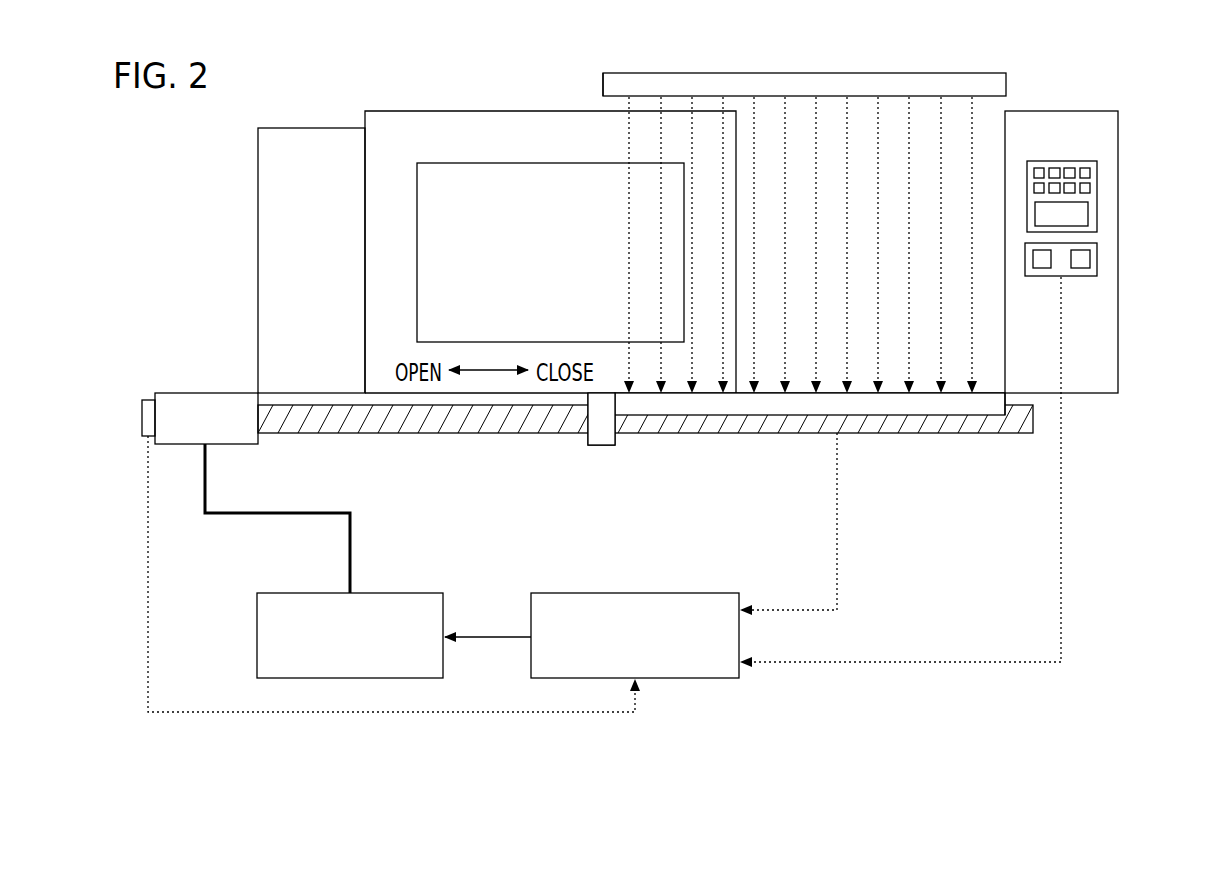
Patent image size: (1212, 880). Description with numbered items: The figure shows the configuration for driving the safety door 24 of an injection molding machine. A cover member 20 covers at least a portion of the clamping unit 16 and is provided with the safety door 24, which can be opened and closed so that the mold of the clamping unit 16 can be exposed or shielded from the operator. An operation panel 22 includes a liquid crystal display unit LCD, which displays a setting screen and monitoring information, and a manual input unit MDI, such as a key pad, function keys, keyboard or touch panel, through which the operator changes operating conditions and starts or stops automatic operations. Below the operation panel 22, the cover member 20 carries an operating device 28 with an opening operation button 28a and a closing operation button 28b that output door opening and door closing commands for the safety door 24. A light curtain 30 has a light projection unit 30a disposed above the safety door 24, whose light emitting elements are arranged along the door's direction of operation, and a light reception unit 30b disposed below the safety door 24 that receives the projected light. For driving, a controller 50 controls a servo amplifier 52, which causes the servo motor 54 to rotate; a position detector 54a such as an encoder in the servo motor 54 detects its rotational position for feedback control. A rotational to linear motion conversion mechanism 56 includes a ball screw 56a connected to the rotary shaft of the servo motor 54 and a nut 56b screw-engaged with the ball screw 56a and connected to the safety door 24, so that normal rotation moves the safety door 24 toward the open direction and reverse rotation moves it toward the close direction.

The clamping unit 16 is at (745, 70).
The cover member 20 is at (300, 126).
The safety door 24 is at (415, 110).
The operation panel 22 is at (1096, 234).
The manual input unit MDI is at (1099, 176).
The liquid crystal display unit LCD is at (1082, 213).
The operating device 28 is at (1089, 294).
The opening operation button 28a is at (1040, 270).
The closing operation button 28b is at (1081, 270).
The light curtain 30 is at (549, 246).
The light projection unit 30a is at (604, 80).
The light reception unit 30b is at (618, 403).
The controller 50 is at (672, 593).
The servo amplifier 52 is at (257, 621).
The servo motor 54 is at (171, 392).
The position detector 54a is at (148, 416).
The rotational to linear motion conversion mechanism 56 is at (645, 465).
The ball screw 56a is at (556, 423).
The nut 56b is at (600, 430).